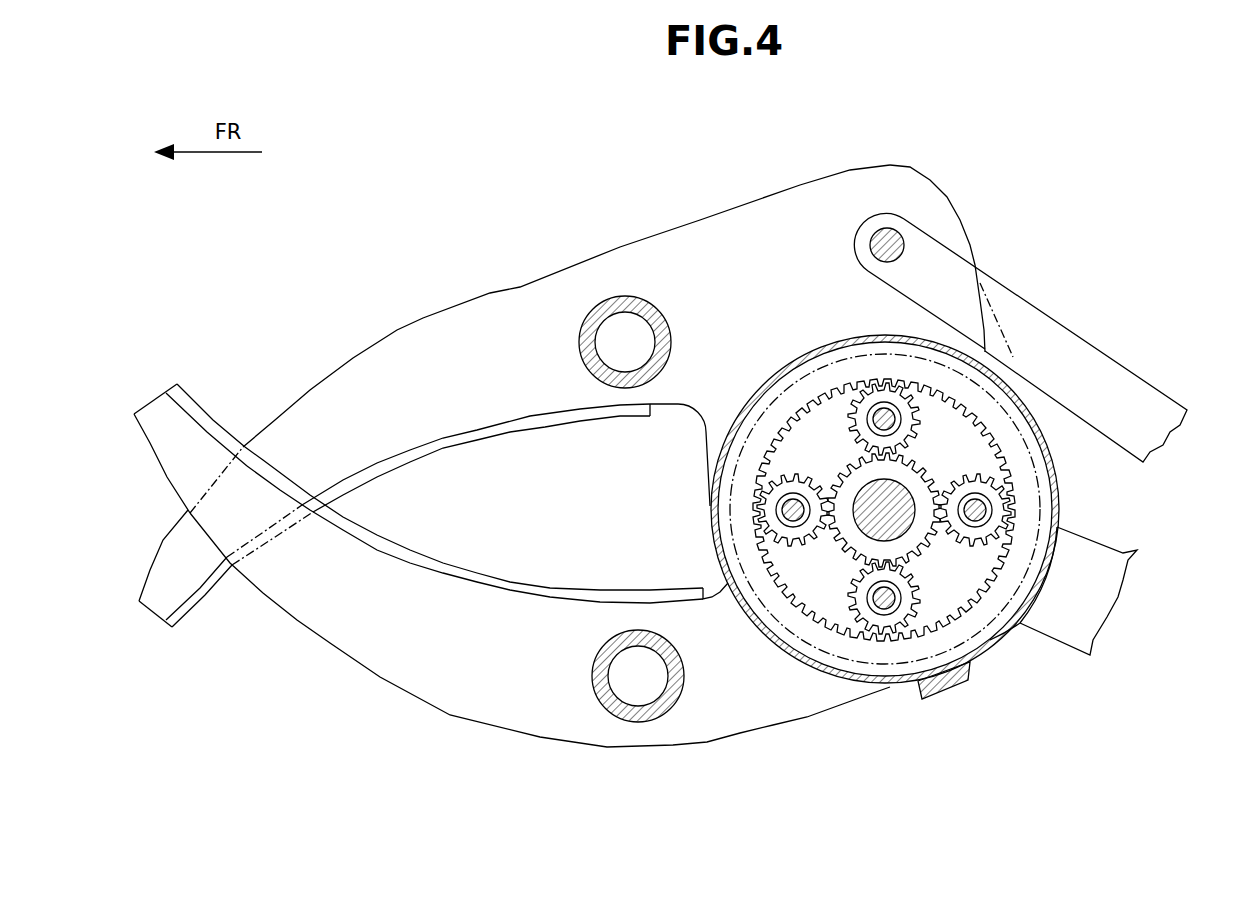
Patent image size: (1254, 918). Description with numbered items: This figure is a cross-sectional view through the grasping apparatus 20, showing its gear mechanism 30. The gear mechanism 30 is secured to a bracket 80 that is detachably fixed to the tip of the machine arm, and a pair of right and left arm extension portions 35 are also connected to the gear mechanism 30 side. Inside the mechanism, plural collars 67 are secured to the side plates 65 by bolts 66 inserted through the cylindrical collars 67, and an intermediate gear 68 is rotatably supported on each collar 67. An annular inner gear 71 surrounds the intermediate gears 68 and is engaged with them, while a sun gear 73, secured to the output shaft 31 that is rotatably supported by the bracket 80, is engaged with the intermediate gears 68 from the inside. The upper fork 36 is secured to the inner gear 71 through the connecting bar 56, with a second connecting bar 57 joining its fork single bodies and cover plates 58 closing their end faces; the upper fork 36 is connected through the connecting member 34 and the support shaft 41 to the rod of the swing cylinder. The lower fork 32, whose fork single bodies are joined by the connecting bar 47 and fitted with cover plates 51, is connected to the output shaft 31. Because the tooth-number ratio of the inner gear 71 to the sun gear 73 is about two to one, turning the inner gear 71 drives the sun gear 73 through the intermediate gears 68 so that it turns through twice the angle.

The grasping apparatus 20 is at (493, 252).
The gear mechanism 30 is at (778, 612).
The output shaft 31 is at (1003, 382).
The lower fork 32 is at (471, 690).
The connecting member 34 is at (1040, 335).
The arm extension portion 35 is at (1090, 597).
The upper fork 36 is at (442, 337).
The support shaft 41 is at (885, 242).
The connecting bar 47 is at (617, 718).
The cover plate 51 is at (218, 418).
The connecting bar 56 is at (953, 700).
The connecting bar 57 is at (593, 307).
The cover plate 58 is at (203, 590).
The side plate 65 is at (992, 633).
The bolt 66 is at (797, 490).
The collar 67 is at (790, 498).
The intermediate gear 68 is at (791, 498).
The inner gear 71 is at (948, 410).
The sun gear 73 is at (905, 500).
The bracket 80 is at (1057, 642).